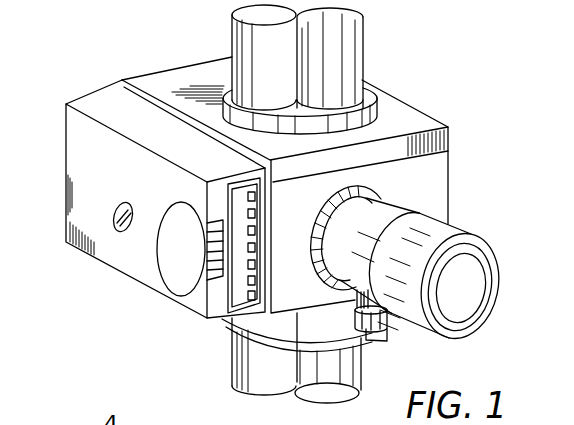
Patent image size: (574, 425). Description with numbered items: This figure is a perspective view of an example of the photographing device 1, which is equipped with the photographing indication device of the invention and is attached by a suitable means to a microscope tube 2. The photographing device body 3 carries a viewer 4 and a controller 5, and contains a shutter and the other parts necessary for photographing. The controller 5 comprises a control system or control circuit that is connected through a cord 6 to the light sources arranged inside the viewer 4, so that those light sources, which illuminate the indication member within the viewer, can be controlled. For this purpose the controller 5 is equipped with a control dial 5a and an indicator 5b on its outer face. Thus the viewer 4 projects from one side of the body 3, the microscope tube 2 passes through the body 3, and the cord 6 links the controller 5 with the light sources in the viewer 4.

The photographing device 1 is at (118, 78).
The microscope tube 2 is at (312, 375).
The photographing device body 3 is at (398, 116).
The viewer 4 is at (422, 221).
The controller 5 is at (120, 252).
The control dial 5a is at (173, 272).
The indicator 5b is at (230, 302).
The cord 6 is at (279, 342).